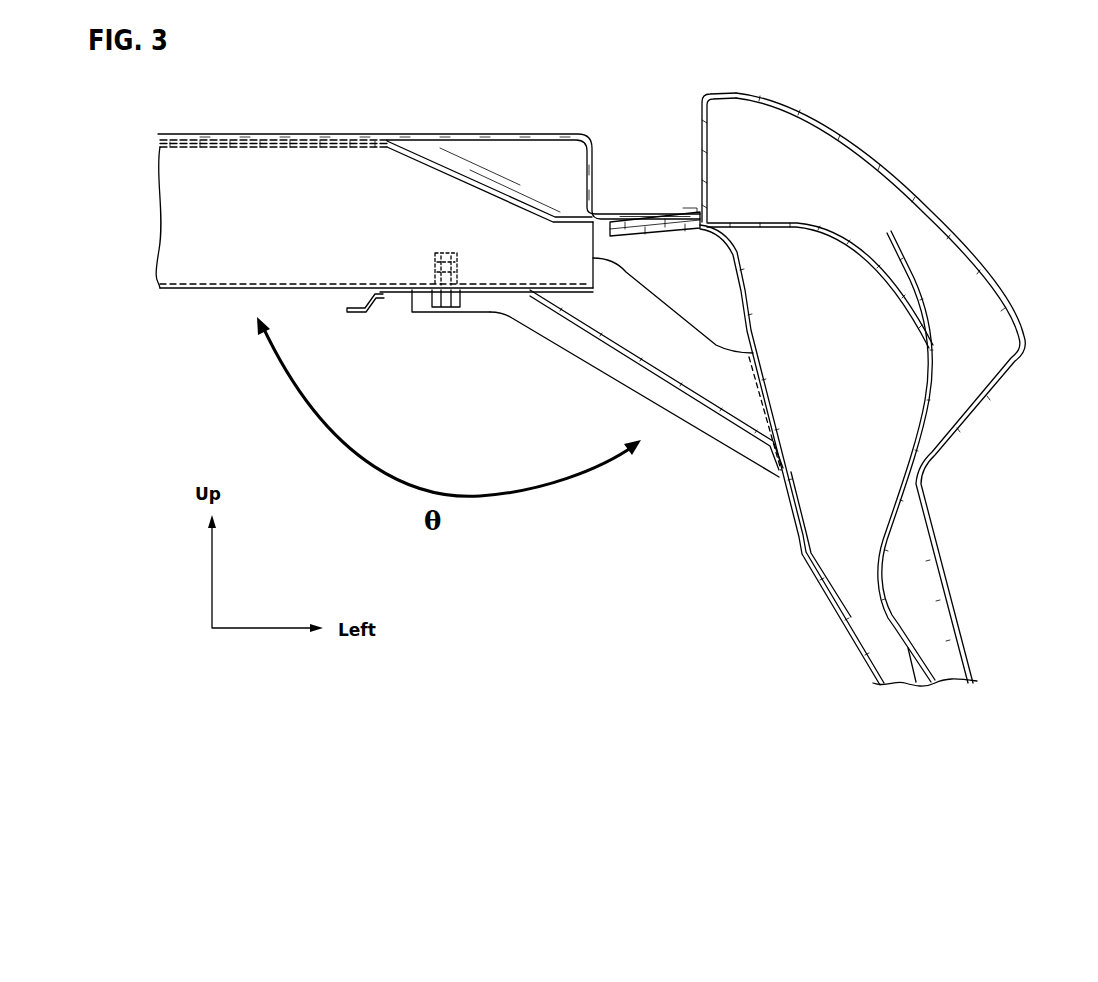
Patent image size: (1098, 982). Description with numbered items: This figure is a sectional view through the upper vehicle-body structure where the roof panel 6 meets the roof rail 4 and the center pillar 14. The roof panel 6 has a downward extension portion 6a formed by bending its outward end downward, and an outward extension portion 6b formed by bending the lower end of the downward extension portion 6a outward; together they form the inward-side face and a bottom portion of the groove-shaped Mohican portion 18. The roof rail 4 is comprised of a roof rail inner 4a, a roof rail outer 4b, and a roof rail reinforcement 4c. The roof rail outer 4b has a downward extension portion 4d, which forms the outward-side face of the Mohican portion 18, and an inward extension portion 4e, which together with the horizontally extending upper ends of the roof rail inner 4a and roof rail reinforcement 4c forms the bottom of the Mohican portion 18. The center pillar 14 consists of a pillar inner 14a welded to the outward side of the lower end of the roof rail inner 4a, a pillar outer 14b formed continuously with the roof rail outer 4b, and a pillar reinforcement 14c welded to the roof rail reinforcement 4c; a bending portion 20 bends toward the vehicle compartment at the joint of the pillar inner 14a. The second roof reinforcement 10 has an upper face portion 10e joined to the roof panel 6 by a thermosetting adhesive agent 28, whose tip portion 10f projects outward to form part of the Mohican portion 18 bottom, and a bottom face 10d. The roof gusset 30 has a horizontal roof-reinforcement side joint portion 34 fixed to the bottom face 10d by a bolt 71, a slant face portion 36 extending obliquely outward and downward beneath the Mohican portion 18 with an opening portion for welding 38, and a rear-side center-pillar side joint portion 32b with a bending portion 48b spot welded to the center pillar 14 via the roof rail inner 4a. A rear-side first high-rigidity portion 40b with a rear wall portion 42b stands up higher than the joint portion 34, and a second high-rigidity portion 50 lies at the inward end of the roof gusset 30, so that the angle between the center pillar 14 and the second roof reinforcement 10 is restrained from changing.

The roof rail 4 is at (854, 389).
The roof rail inner 4a is at (753, 310).
The roof rail outer 4b is at (928, 217).
The roof rail reinforcement 4c is at (813, 223).
The downward extension portion 4d is at (708, 143).
The inward extension portion 4e is at (686, 209).
The roof panel 6 is at (429, 141).
The downward extension portion 6a is at (587, 175).
The outward extension portion 6b is at (625, 212).
The second roof reinforcement 10 is at (428, 222).
The bottom face 10d is at (318, 283).
The upper face portion 10e is at (268, 148).
The tip portion 10f is at (653, 210).
The center pillar 14 is at (919, 482).
The pillar inner 14a is at (873, 665).
The pillar outer 14b is at (972, 655).
The pillar reinforcement 14c is at (908, 652).
The Mohican portion 18 is at (660, 123).
The bending portion 20 is at (807, 553).
The thermosetting adhesive agent 28 is at (274, 134).
The roof gusset 30 is at (638, 462).
The rear-side center-pillar side joint portion 32b is at (797, 538).
The roof-reinforcement side joint portion 34 is at (490, 313).
The slant face portion 36 is at (760, 442).
The opening portion for welding 38 is at (627, 360).
The rear-side first high-rigidity portion 40b is at (565, 351).
The rear wall portion 42b is at (660, 298).
The bending portion 48b is at (798, 556).
The second high-rigidity portion 50 is at (357, 313).
The bolt 71 is at (443, 313).